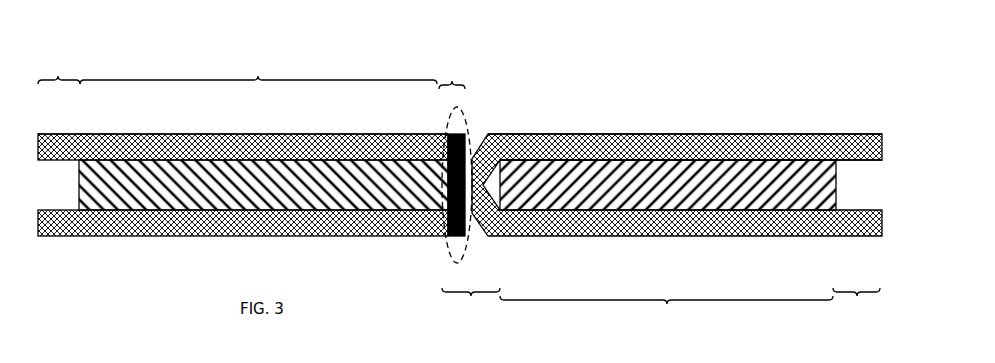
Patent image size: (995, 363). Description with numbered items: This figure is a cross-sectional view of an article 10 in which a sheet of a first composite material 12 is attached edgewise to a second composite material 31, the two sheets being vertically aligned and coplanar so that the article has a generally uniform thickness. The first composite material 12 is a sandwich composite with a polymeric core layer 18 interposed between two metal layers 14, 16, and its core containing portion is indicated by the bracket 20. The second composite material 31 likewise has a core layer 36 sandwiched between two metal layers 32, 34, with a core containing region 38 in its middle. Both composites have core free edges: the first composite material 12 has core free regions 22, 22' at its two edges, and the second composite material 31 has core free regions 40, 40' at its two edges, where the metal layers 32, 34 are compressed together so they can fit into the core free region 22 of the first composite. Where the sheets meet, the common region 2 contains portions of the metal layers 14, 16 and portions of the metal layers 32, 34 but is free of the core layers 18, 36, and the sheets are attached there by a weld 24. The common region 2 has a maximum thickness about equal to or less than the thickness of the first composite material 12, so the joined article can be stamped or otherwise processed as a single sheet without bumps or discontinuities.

The common region 2 is at (476, 235).
The article 10 is at (612, 50).
The first composite material 12 is at (197, 150).
The metal layer 14 is at (128, 134).
The metal layer 16 is at (178, 212).
The core layer 18 is at (268, 171).
The first panel 20 is at (258, 66).
The core free region 22 is at (451, 70).
The opposite panel edge portion 22' is at (59, 66).
The weld 24 is at (450, 212).
The second composite material 31 is at (672, 134).
The metal layer 32 is at (742, 134).
The metal layer 34 is at (552, 159).
The core layer 36 is at (593, 195).
The core containing region 38 is at (666, 323).
The core free region 40 is at (471, 311).
The opposite edge portion of second panel 40' is at (856, 315).